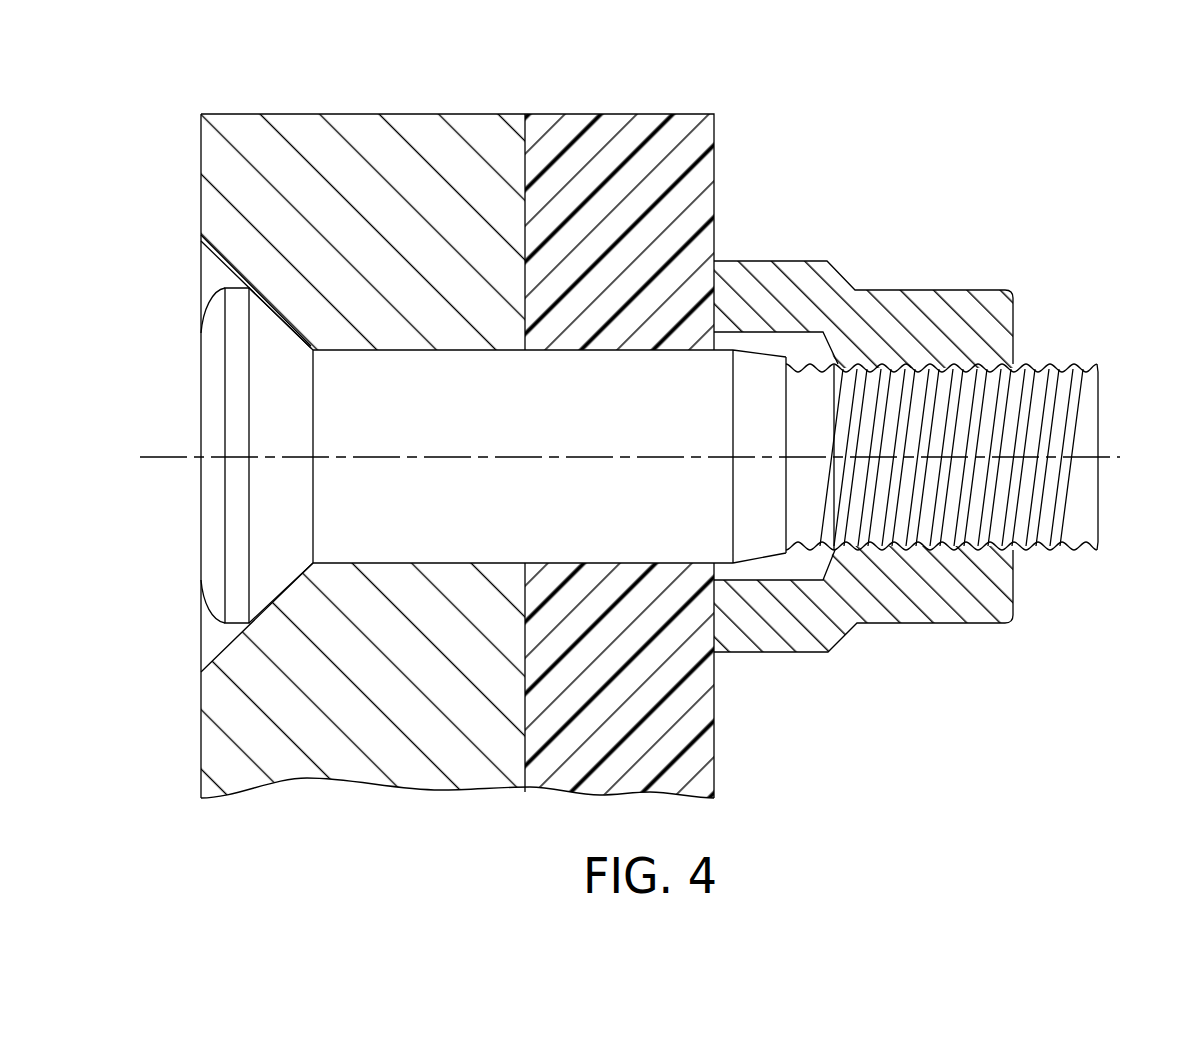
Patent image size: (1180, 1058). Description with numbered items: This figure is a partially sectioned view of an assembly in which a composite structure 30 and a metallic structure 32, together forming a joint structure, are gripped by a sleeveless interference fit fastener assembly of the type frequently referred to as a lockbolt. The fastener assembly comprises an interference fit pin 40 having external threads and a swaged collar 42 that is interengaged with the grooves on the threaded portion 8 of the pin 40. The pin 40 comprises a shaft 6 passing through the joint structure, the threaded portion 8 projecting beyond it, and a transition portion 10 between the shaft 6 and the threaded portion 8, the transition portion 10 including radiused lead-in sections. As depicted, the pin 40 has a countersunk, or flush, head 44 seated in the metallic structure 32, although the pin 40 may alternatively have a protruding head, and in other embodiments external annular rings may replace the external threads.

The shaft 6 is at (397, 565).
The threaded portion 8 is at (1082, 366).
The transition portion 10 is at (629, 425).
The composite structure 30 is at (645, 160).
The metallic structure 32 is at (342, 162).
The interference fit pin 40 is at (168, 359).
The swaged collar 42 is at (922, 290).
The countersunk head 44 is at (213, 610).